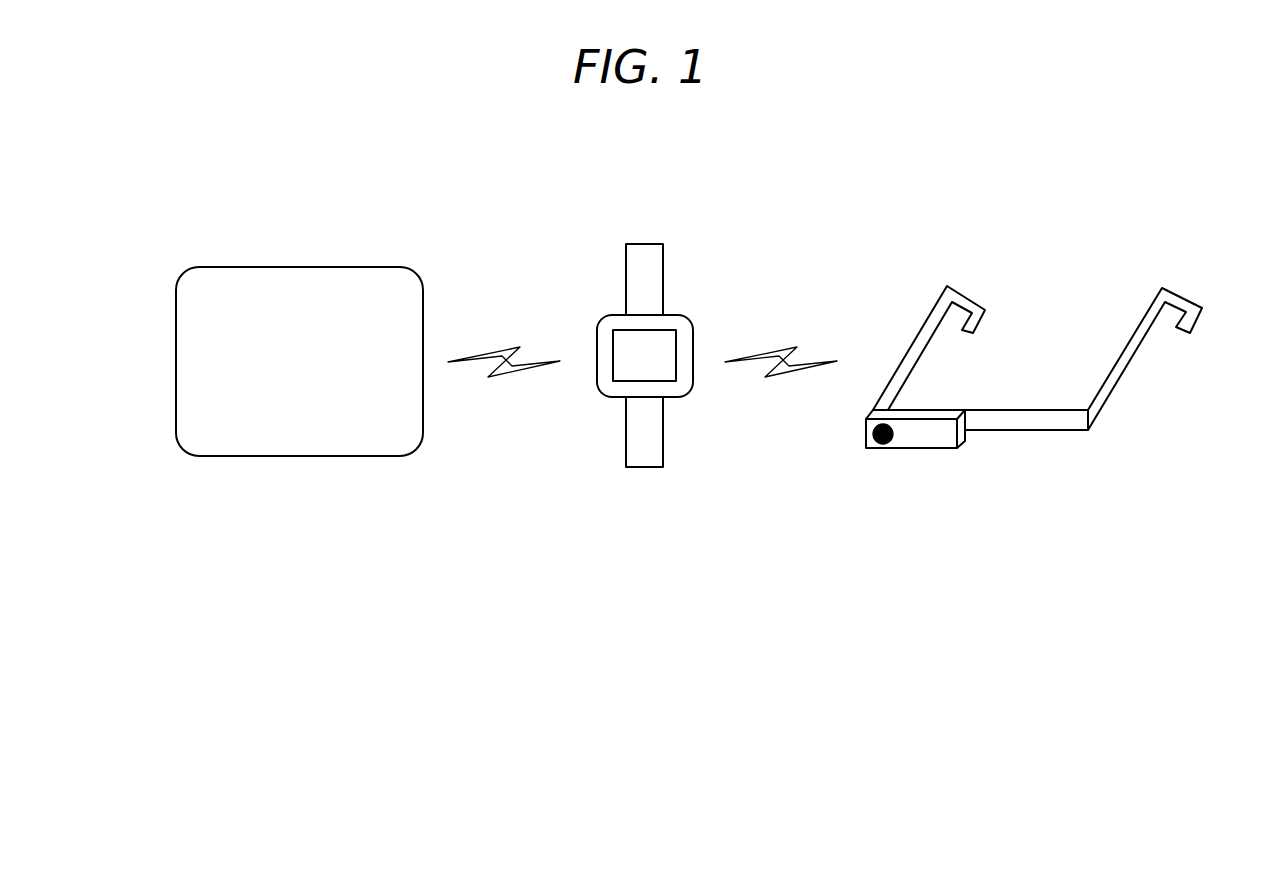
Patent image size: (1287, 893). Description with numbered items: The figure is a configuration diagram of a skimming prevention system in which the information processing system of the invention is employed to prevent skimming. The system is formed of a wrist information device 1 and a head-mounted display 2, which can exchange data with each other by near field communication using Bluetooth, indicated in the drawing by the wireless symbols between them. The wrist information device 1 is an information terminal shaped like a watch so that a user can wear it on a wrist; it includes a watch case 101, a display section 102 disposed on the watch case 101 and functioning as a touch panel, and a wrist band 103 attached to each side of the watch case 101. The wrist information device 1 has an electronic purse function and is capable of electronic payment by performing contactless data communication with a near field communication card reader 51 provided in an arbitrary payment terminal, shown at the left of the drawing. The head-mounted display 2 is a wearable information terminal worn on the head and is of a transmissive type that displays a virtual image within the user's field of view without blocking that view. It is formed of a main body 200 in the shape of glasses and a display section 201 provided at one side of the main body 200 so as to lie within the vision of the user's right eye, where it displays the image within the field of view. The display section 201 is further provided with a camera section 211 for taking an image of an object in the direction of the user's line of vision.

The near field communication card reader 51 is at (312, 235).
The wrist information device 1 is at (652, 310).
The watch case 101 is at (680, 313).
The display section 102 is at (632, 368).
The wrist band 103 is at (637, 282).
The head-mounted display 2 is at (1024, 364).
The main body 200 is at (1023, 432).
The display section 201 is at (906, 479).
The camera section 211 is at (883, 443).